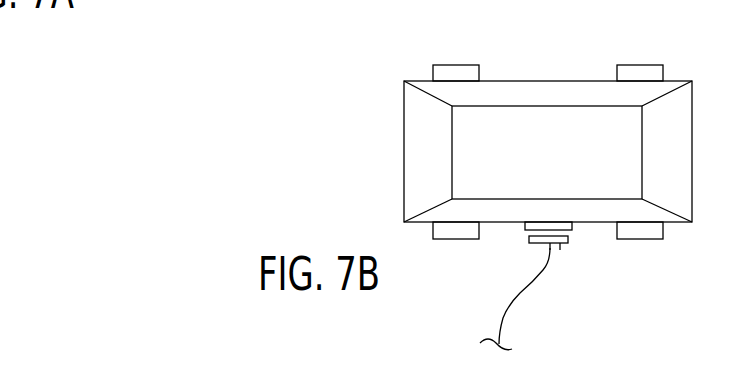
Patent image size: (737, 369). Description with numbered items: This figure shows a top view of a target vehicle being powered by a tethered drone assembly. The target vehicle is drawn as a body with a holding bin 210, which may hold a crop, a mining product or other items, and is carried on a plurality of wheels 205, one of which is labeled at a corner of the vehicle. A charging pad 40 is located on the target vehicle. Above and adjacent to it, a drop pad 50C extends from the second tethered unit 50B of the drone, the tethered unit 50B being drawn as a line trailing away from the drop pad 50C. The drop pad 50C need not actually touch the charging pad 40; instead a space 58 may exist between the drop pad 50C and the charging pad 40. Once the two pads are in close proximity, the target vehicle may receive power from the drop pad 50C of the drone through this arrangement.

The holding bin 210 is at (550, 80).
The wheels 205 is at (640, 240).
The space 58 is at (571, 233).
The charging pad 40 is at (528, 239).
The drop pad 50C is at (560, 250).
The second tethered unit 50B is at (518, 295).